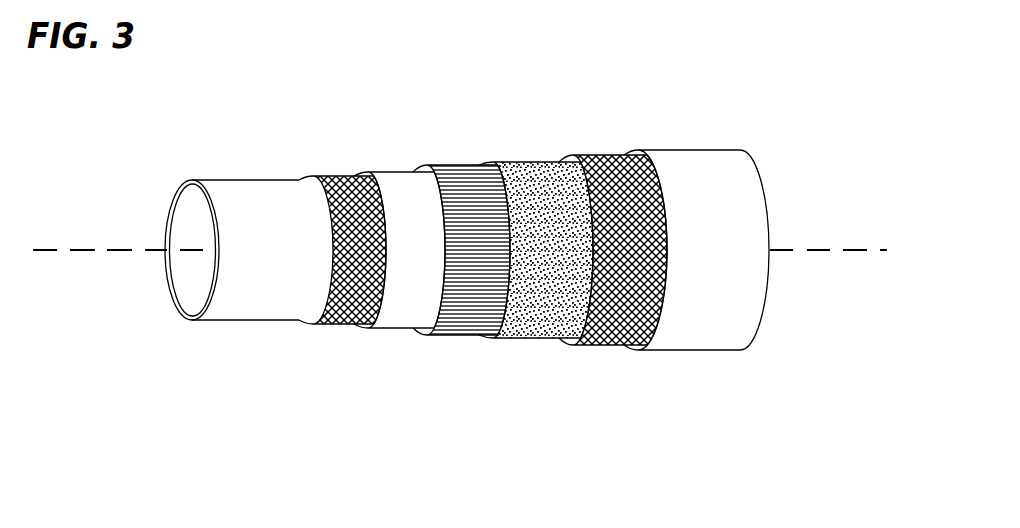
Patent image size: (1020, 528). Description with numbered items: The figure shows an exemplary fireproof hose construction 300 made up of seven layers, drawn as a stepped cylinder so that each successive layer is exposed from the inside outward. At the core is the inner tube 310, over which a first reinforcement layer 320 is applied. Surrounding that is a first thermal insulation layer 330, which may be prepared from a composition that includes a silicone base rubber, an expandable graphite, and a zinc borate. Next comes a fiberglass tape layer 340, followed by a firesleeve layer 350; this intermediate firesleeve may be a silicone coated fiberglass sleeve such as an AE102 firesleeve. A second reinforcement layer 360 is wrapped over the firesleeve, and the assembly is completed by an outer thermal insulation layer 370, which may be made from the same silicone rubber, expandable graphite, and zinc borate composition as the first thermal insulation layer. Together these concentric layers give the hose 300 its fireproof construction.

The fireproof hose construction 300 is at (460, 255).
The inner tube 310 is at (238, 332).
The first reinforcement layer 320 is at (338, 332).
The first thermal insulation layer 330 is at (393, 338).
The fiberglass tape layer 340 is at (460, 340).
The firesleeve layer 350 is at (538, 347).
The second reinforcement layer 360 is at (613, 350).
The outer thermal insulation layer 370 is at (747, 357).